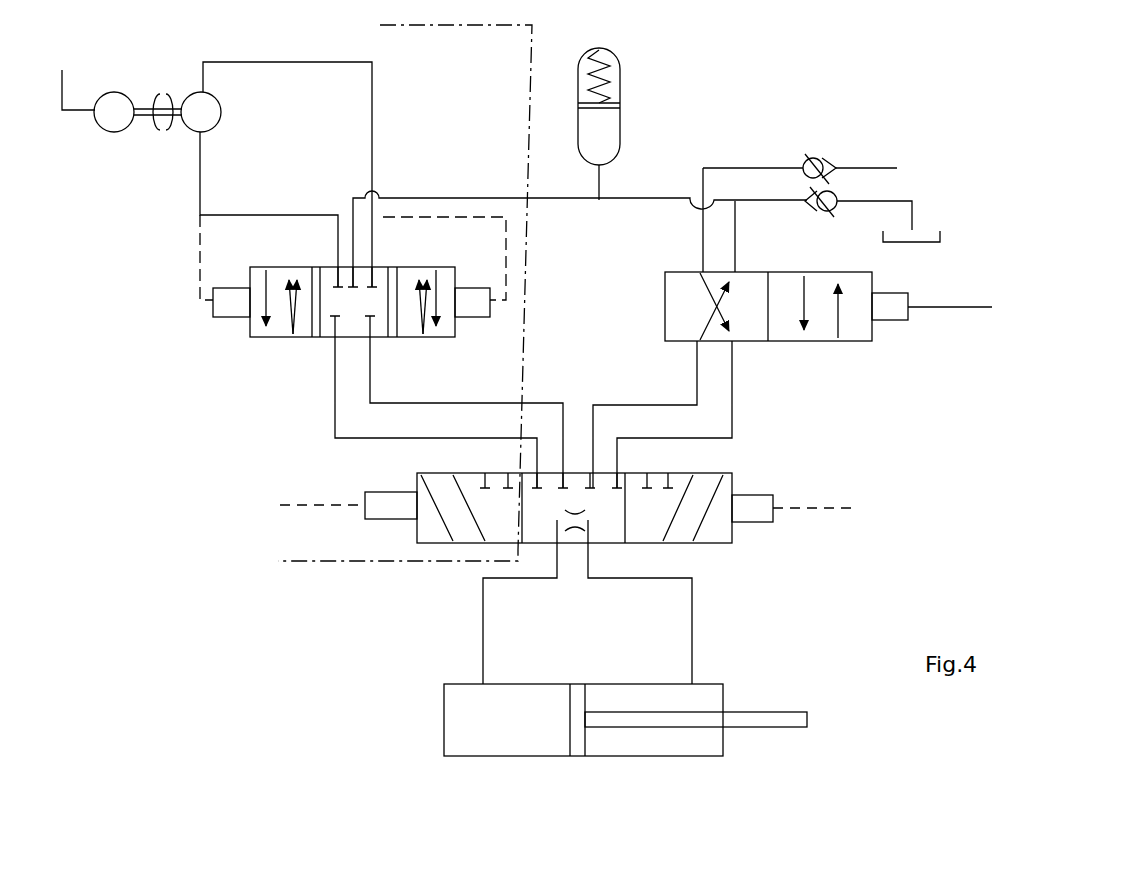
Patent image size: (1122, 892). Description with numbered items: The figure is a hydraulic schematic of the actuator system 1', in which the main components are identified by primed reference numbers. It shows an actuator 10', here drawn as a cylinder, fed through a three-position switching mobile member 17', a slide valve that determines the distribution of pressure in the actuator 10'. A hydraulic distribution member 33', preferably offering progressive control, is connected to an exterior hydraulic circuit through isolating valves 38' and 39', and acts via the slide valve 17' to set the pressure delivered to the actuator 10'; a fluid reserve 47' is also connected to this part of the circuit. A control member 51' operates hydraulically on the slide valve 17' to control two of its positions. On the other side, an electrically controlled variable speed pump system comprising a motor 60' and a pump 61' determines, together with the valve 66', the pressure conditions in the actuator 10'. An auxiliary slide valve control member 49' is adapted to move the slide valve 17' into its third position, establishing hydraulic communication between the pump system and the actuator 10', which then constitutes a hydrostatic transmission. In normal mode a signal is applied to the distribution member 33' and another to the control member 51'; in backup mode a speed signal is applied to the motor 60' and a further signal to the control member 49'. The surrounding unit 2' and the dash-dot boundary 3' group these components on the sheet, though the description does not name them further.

The actuator system 1' is at (1070, 172).
The hydraulic unit 2' is at (809, 280).
The control unit boundary 3' is at (441, 283).
The actuator 10' is at (625, 770).
The three-position switching mobile member 17' is at (570, 546).
The hydraulic distribution member 33' is at (845, 341).
The isolating valve 38' is at (859, 221).
The isolating valve 39' is at (818, 139).
The fluid reserve 47' is at (650, 124).
The auxiliary slide valve control member 49' is at (338, 563).
The control member 51' is at (806, 544).
The motor 60' is at (87, 111).
The pump 61' is at (466, 174).
The valve 66' is at (380, 351).